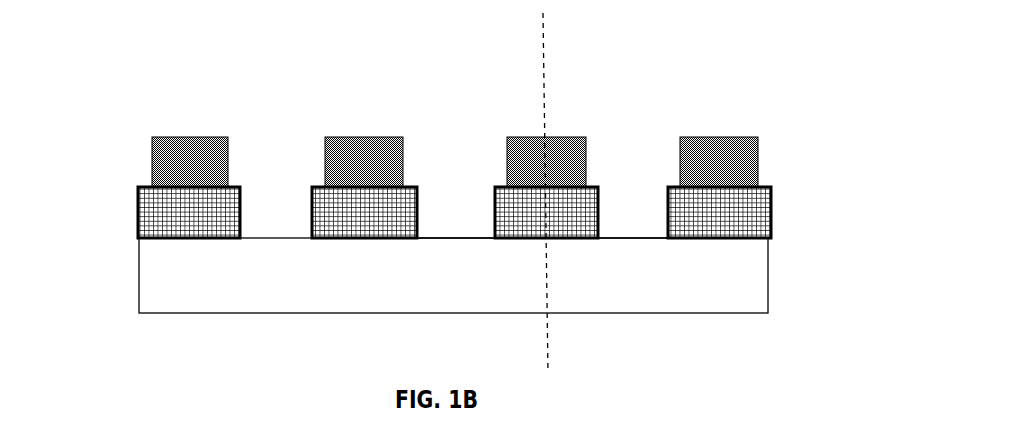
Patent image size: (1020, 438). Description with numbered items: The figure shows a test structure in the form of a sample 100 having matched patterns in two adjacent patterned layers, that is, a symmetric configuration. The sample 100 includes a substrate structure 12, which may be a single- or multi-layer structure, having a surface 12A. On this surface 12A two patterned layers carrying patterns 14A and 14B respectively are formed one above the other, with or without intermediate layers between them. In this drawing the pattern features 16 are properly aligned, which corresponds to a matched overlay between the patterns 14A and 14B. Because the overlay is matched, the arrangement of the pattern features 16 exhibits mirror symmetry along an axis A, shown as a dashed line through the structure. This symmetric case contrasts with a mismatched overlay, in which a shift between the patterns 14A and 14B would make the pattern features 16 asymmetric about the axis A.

The sample 100 is at (122, 133).
The substrate structure 12 is at (460, 287).
The surface 12A is at (620, 237).
The pattern 14A is at (774, 124).
The pattern 14B is at (786, 205).
The pattern features 16 is at (338, 127).
The axis A is at (555, 335).